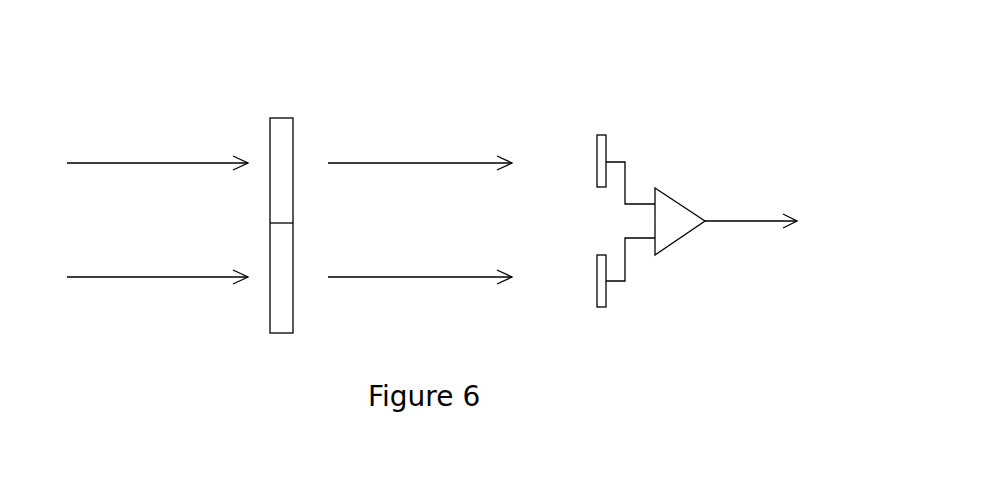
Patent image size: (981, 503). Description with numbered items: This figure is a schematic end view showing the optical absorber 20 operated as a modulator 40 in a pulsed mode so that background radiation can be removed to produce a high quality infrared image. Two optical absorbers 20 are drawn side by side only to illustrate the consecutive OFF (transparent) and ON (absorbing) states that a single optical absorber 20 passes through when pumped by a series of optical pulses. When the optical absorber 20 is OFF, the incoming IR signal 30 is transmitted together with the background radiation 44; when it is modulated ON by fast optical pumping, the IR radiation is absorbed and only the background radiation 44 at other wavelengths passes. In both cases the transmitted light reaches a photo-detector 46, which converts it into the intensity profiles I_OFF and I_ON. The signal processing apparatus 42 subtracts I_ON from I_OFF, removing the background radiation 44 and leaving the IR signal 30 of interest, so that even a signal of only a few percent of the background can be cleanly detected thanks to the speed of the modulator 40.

The optical absorber 20 is at (293, 137).
The IR signal 30 is at (113, 149).
The modulator 40 is at (518, 83).
The signal processing apparatus 42 is at (807, 120).
The background radiation 44 is at (181, 149).
The photo-detector 46 is at (596, 184).